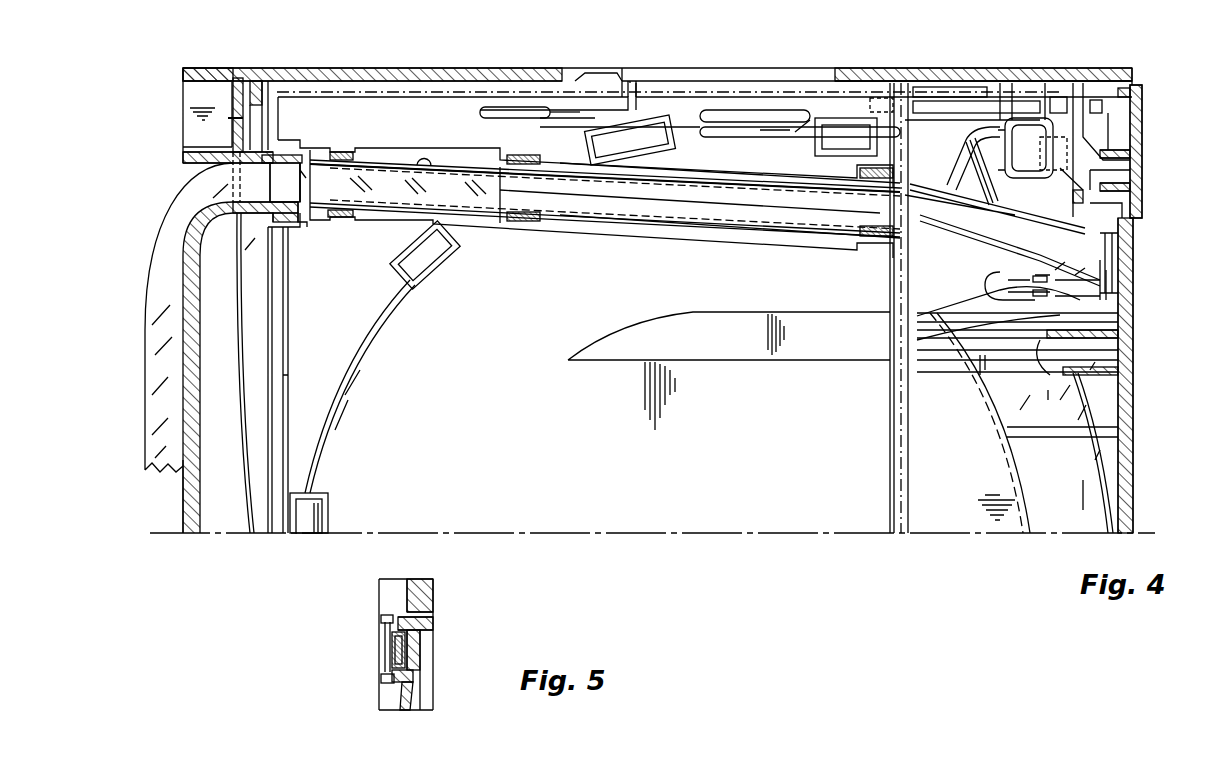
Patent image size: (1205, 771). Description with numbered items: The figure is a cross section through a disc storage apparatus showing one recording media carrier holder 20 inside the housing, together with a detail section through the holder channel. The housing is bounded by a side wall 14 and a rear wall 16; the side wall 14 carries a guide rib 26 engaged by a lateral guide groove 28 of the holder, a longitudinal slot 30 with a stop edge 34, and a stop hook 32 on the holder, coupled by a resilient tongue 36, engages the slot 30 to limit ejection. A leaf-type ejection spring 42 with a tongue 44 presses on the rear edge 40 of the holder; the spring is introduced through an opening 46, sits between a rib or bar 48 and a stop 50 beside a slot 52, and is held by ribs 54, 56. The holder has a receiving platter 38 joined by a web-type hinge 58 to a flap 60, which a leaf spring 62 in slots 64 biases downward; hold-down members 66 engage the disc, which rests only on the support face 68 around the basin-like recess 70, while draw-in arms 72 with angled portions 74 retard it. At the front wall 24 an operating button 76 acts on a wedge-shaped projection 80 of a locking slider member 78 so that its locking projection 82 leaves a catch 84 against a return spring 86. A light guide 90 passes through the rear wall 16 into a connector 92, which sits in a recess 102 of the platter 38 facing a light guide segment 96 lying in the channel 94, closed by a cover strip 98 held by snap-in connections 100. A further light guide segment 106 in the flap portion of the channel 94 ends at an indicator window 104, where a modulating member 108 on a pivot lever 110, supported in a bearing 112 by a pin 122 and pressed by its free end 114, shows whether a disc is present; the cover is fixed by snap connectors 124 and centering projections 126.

In FIG. 4, the side wall 14 is at (408, 70).
In FIG. 4, the rear wall 16 is at (184, 518).
In FIG. 4, the recording media carrier holder 20 is at (486, 71).
In FIG. 4, the front wall 24 is at (1133, 430).
In FIG. 4, the guide rib 26 is at (647, 73).
In FIG. 4, the lateral guide groove 28 is at (370, 92).
In FIG. 4, the longitudinal slot 30 is at (632, 75).
In FIG. 4, the stop hook 32 is at (600, 72).
In FIG. 4, the stop edge 34 is at (828, 72).
In FIG. 4, the resilient tongue 36 is at (530, 92).
In FIG. 4, the receiving platter 38 is at (360, 386).
In FIG. 5, the receiving platter 38 is at (430, 592).
In FIG. 4, the rear edge 40 is at (268, 478).
In FIG. 4, the ejection spring 42 is at (243, 118).
In FIG. 4, the tongue 44 is at (250, 454).
In FIG. 4, the opening 46 is at (182, 102).
In FIG. 4, the rib or bar 48 is at (258, 76).
In FIG. 4, the stop 50 is at (212, 70).
In FIG. 4, the slot 52 is at (240, 76).
In FIG. 4, the rib 54 is at (182, 156).
In FIG. 4, the rib 56 is at (258, 129).
In FIG. 4, the web-type hinge 58 is at (908, 435).
In FIG. 4, the flap 60 is at (967, 530).
In FIG. 4, the leaf spring 62 is at (951, 98).
In FIG. 4, the slot 64 is at (874, 96).
In FIG. 4, the hold-down member 66 is at (425, 272).
In FIG. 5, the support face 68 is at (414, 675).
In FIG. 4, the basin-like recess 70 is at (598, 535).
In FIG. 5, the basin-like recess 70 is at (411, 712).
In FIG. 4, the draw-in arm 72 is at (735, 108).
In FIG. 4, the angled portion 74 is at (790, 135).
In FIG. 4, the operating button 76 is at (1142, 197).
In FIG. 4, the locking slider member 78 is at (1115, 110).
In FIG. 4, the wedge-shaped projection 80 is at (1128, 168).
In FIG. 4, the locking projection 82 is at (1084, 82).
In FIG. 4, the catch 84 is at (1059, 95).
In FIG. 4, the return spring 86 is at (990, 198).
In FIG. 4, the light guide 90 is at (183, 468).
In FIG. 4, the connector 92 is at (300, 223).
In FIG. 4, the channel 94 is at (446, 172).
In FIG. 5, the channel 94 is at (420, 653).
In FIG. 4, the light guide segment 96 is at (500, 210).
In FIG. 5, the light guide segment 96 is at (395, 658).
In FIG. 4, the cover strip 98 is at (699, 210).
In FIG. 5, the cover strip 98 is at (386, 638).
In FIG. 4, the snap-in connection 100 is at (352, 150).
In FIG. 5, the snap-in connection 100 is at (383, 614).
In FIG. 4, the recess 102 is at (300, 225).
In FIG. 4, the indicator window 104 is at (1135, 284).
In FIG. 4, the light guide segment 106 is at (927, 222).
In FIG. 4, the modulating member 108 is at (1133, 320).
In FIG. 4, the pivot lever 110 is at (1090, 253).
In FIG. 4, the bearing 112 is at (1000, 320).
In FIG. 4, the free end 114 is at (1000, 270).
In FIG. 4, the pin 122 is at (1020, 298).
In FIG. 4, the snap connector 124 is at (1133, 385).
In FIG. 4, the centering projection 126 is at (1039, 338).